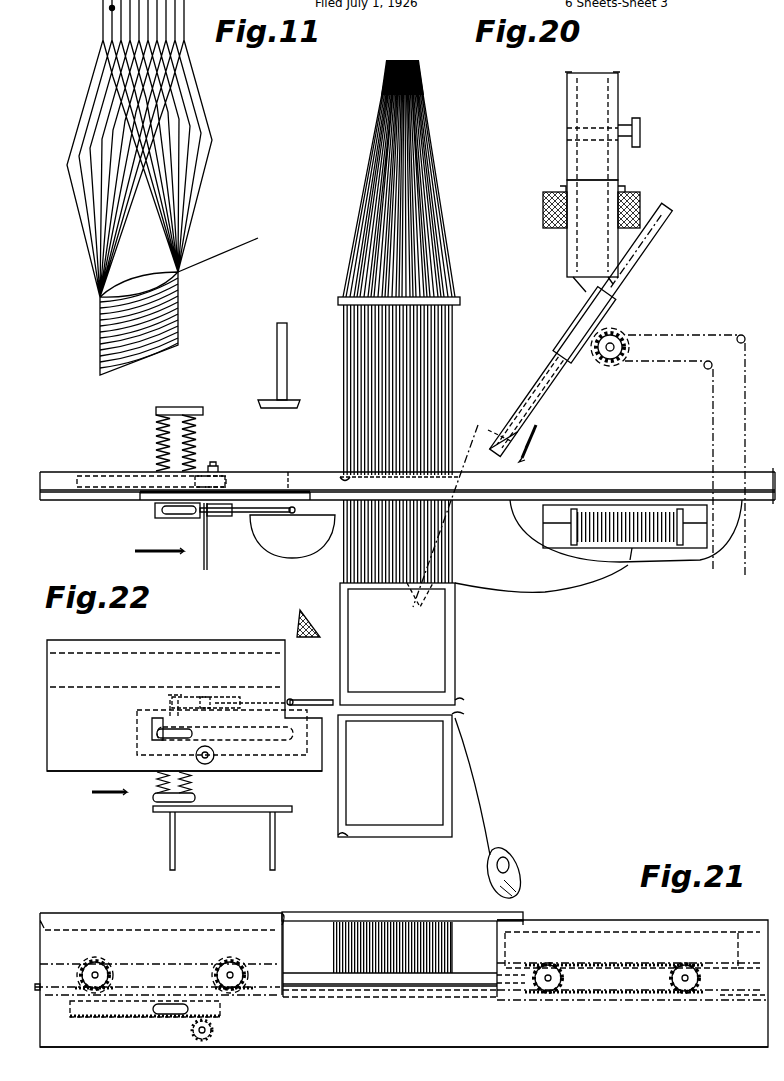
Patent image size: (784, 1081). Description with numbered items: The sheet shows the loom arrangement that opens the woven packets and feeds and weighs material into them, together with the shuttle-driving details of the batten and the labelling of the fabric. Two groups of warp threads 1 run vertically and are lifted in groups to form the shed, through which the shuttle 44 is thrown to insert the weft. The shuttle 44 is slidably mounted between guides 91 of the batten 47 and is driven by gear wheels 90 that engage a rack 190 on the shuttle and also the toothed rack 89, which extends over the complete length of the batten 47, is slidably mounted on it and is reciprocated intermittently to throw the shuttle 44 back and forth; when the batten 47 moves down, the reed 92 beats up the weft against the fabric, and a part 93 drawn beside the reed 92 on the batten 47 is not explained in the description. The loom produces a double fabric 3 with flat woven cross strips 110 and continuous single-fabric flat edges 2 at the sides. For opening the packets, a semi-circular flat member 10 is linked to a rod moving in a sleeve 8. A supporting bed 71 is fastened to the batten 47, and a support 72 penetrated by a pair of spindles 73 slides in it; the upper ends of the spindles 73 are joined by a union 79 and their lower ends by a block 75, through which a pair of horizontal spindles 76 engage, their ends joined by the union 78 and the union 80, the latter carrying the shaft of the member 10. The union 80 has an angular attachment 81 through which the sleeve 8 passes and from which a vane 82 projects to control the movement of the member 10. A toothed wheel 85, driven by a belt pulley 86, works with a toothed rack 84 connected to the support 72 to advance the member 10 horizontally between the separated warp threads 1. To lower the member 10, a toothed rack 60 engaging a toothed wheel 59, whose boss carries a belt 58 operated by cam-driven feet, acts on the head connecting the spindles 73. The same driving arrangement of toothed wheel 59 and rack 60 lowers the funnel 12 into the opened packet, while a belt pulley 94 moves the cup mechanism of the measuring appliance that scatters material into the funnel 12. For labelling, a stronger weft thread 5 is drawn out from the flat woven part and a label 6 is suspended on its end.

In FIG. 11, the warp threads 1 is at (90, 95).
In FIG. 20, the warp threads 1 is at (360, 198).
In FIG. 20, the continuous flat edges 2 is at (452, 648).
In FIG. 11, the double fabric 3 is at (138, 352).
In FIG. 20, the double fabric 3 is at (408, 818).
In FIG. 11, the weft thread 5 is at (236, 247).
In FIG. 20, the weft thread 5 is at (545, 593).
In FIG. 20, the label 6 is at (512, 870).
In FIG. 20, the sleeve 8 is at (243, 514).
In FIG. 22, the sleeve 8 is at (255, 697).
In FIG. 20, the semi-circular flat member 10 is at (292, 553).
In FIG. 22, the semi-circular flat member 10 is at (318, 698).
In FIG. 20, the funnel 12 is at (486, 432).
In FIG. 20, the shuttle 44 is at (690, 553).
In FIG. 21, the shuttle 44 is at (603, 940).
In FIG. 20, the batten 47 is at (608, 483).
In FIG. 21, the batten 47 is at (616, 1040).
In FIG. 20, the belt 58 is at (713, 416).
In FIG. 20, the toothed wheel 59 is at (611, 334).
In FIG. 20, the toothed rack 60 is at (653, 255).
In FIG. 20, the supporting bed 71 is at (150, 499).
In FIG. 22, the supporting bed 71 is at (137, 755).
In FIG. 22, the support 72 is at (150, 733).
In FIG. 20, the spindles 73 is at (158, 443).
In FIG. 20, the block 75 is at (160, 516).
In FIG. 22, the spindles 76 is at (157, 784).
In FIG. 20, the union 78 is at (172, 513).
In FIG. 22, the union 78 is at (195, 798).
In FIG. 20, the union 79 is at (190, 407).
In FIG. 22, the union 79 is at (157, 735).
In FIG. 21, the union 79 is at (170, 1015).
In FIG. 22, the union 80 is at (178, 700).
In FIG. 22, the angular attachment 81 is at (235, 697).
In FIG. 20, the vane 82 is at (207, 560).
In FIG. 20, the toothed rack 84 is at (92, 475).
In FIG. 21, the toothed rack 84 is at (108, 1010).
In FIG. 20, the toothed wheel 85 is at (226, 475).
In FIG. 21, the toothed wheel 85 is at (210, 1038).
In FIG. 20, the belt pulley 86 is at (215, 462).
In FIG. 22, the belt pulley 86 is at (210, 762).
In FIG. 21, the toothed rack 89 is at (735, 1000).
In FIG. 21, the gear wheels 90 is at (682, 993).
In FIG. 21, the guides 91 is at (745, 947).
In FIG. 20, the reed 92 is at (340, 480).
In FIG. 21, the reed 92 is at (335, 925).
In FIG. 20, the guide block 93 is at (300, 480).
In FIG. 21, the guide block 93 is at (474, 930).
In FIG. 20, the belt pulley 94 is at (606, 182).
In FIG. 20, the flat woven cross strips 110 is at (402, 774).
In FIG. 21, the rack 190 is at (615, 968).